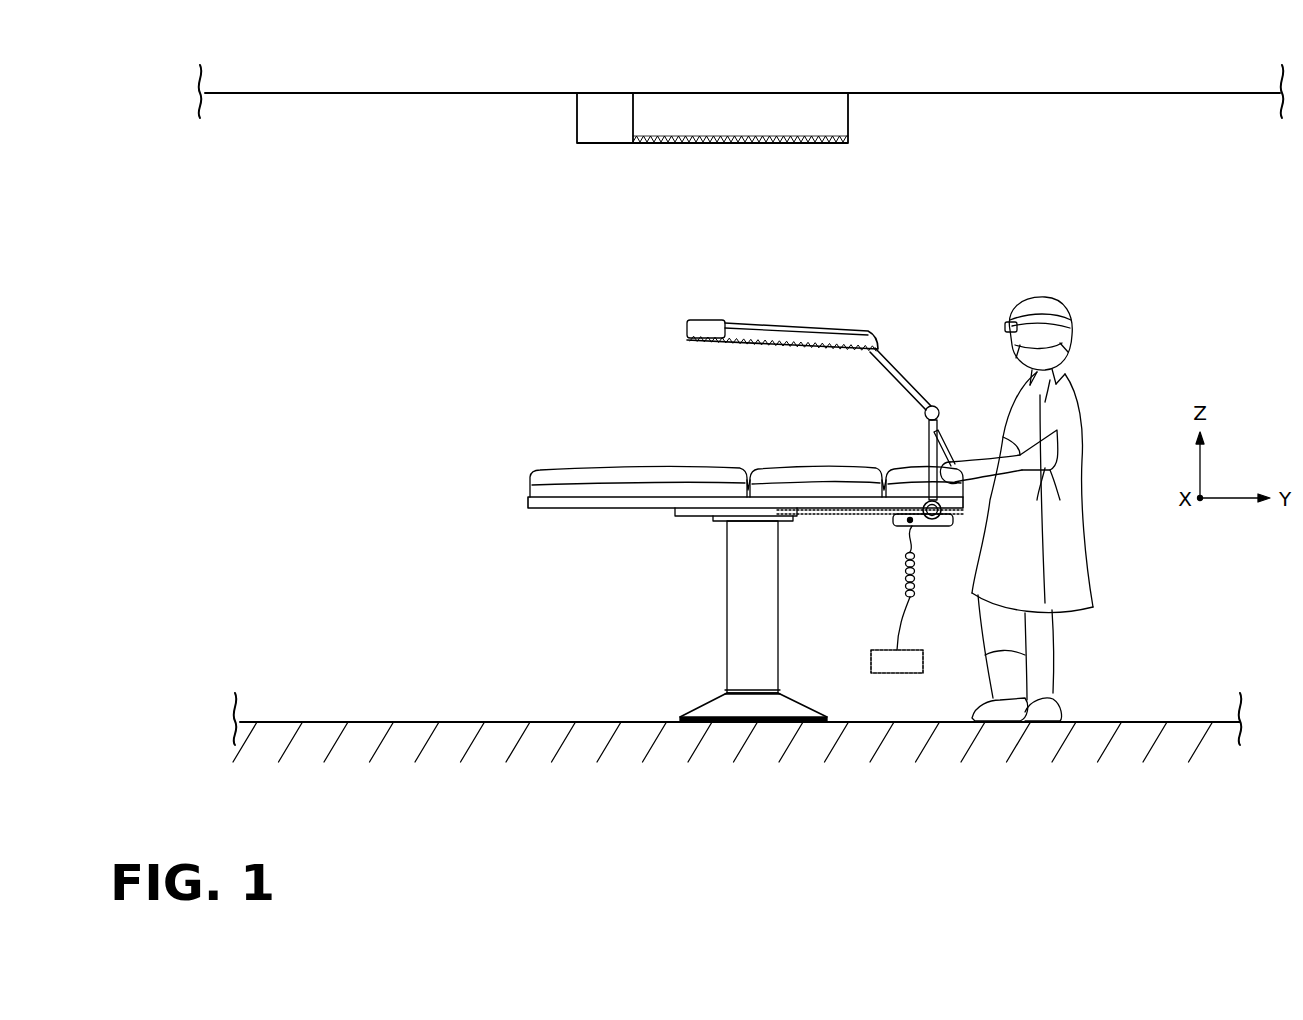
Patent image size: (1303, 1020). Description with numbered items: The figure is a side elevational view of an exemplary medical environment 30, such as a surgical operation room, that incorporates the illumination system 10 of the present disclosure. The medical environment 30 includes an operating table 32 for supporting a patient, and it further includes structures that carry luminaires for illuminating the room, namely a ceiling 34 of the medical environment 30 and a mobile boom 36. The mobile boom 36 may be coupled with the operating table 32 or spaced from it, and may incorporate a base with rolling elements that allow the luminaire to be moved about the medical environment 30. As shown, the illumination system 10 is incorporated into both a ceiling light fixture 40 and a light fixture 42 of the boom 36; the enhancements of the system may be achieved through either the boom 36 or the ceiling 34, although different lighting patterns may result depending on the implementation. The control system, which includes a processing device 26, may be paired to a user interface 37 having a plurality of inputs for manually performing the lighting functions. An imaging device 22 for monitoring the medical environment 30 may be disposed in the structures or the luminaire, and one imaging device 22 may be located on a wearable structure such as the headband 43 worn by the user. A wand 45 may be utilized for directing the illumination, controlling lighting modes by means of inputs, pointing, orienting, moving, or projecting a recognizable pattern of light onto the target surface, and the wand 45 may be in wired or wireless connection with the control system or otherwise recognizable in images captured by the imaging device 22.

The illumination system 10 is at (962, 184).
The imaging device 22 is at (615, 125).
The processing device 26 is at (710, 320).
The medical environment 30 is at (439, 282).
The operating table 32 is at (529, 470).
The ceiling 34 is at (330, 88).
The mobile boom 36 is at (929, 447).
The user interface 37 is at (880, 650).
The ceiling light fixture 40 is at (733, 93).
The light fixture 42 is at (892, 368).
The headband 43 is at (1065, 312).
The wand 45 is at (944, 446).